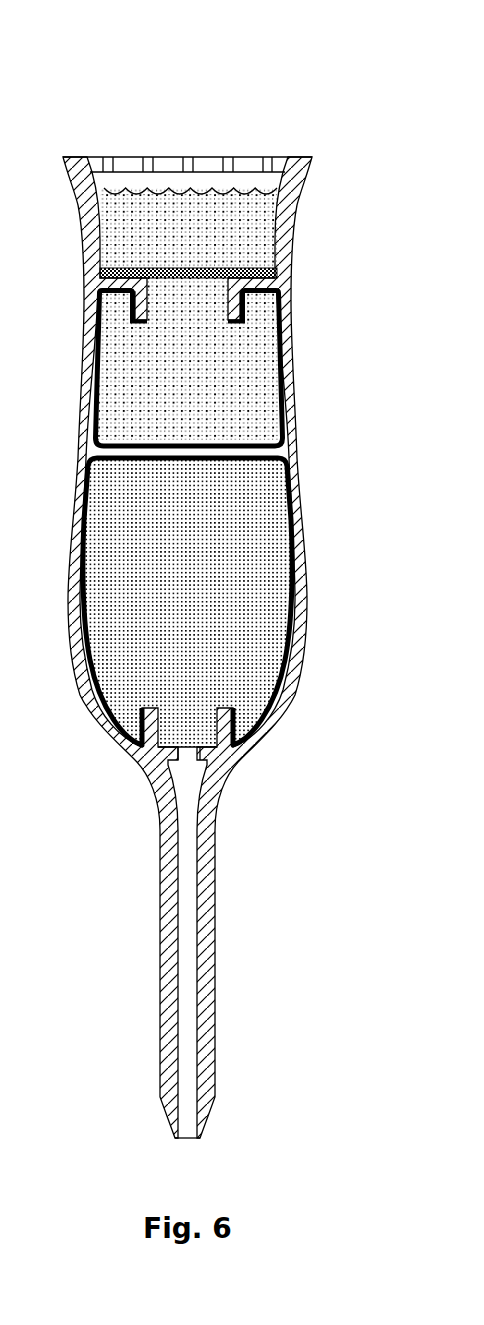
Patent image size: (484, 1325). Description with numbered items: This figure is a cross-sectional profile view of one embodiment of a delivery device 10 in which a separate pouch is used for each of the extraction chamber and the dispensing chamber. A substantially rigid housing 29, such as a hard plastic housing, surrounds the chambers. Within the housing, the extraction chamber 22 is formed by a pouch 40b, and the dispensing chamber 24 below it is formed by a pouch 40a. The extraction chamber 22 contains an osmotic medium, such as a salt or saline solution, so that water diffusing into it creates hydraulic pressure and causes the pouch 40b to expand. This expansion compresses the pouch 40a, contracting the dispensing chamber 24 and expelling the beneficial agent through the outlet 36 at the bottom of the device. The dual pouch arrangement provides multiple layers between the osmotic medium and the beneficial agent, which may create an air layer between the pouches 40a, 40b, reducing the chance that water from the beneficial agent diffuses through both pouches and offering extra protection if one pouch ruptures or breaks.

The delivery device 10 is at (100, 79).
The extraction chamber 22 is at (253, 366).
The dispensing chamber 24 is at (262, 569).
The housing 29 is at (293, 470).
The outlet 36 is at (188, 751).
The pouch 40a is at (283, 520).
The pouch 40b is at (285, 419).